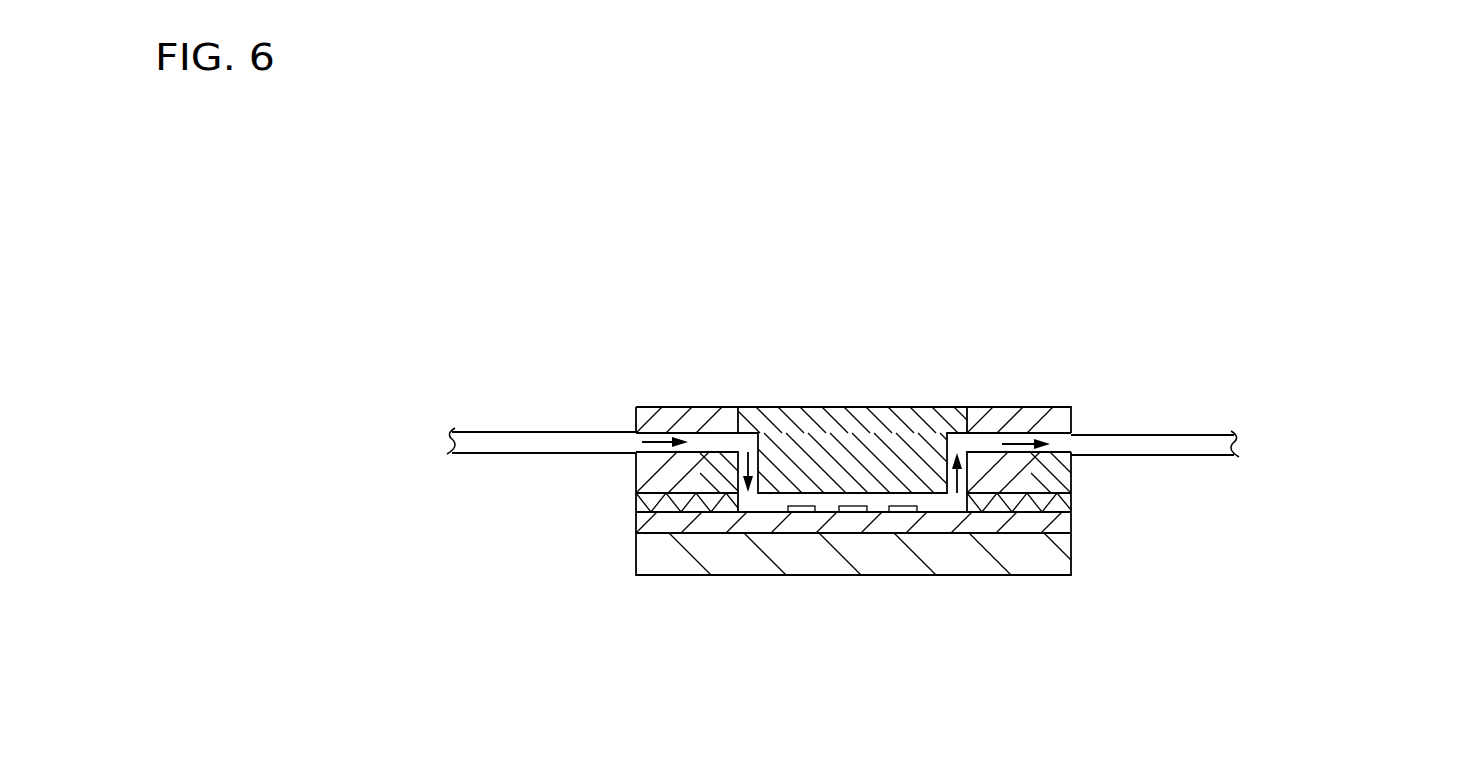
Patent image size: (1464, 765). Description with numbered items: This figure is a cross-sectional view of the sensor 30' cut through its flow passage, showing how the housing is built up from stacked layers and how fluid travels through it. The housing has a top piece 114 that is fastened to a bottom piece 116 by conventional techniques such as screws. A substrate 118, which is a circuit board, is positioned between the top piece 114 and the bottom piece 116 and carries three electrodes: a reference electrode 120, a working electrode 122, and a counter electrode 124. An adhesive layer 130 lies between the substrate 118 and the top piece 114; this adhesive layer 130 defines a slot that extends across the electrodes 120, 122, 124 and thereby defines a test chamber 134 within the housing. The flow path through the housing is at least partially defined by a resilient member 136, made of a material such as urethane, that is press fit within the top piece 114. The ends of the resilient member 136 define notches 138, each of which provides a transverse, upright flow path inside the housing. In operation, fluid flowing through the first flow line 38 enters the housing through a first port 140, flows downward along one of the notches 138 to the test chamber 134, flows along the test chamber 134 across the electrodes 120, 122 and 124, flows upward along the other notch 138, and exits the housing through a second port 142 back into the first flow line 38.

The sensor 30' is at (1038, 465).
The first flow line 38 is at (525, 452).
The top piece 114 is at (673, 407).
The bottom piece 116 is at (723, 575).
The substrate 118 is at (1072, 523).
The reference electrode 120 is at (800, 512).
The working electrode 122 is at (851, 512).
The counter electrode 124 is at (905, 512).
The adhesive layer 130 is at (637, 501).
The test chamber 134 is at (829, 502).
The resilient member 136 is at (912, 407).
The notches 138 is at (757, 452).
The first port 140 is at (641, 437).
The second port 142 is at (1058, 437).